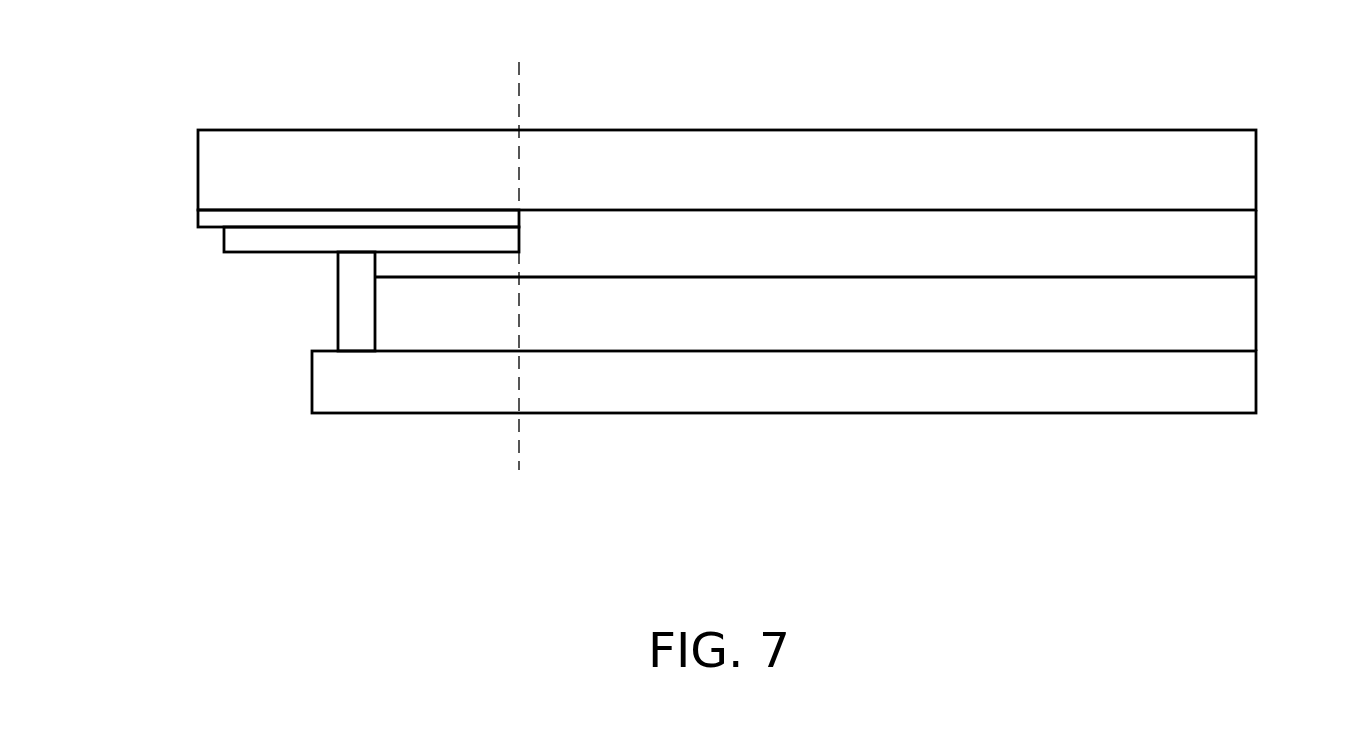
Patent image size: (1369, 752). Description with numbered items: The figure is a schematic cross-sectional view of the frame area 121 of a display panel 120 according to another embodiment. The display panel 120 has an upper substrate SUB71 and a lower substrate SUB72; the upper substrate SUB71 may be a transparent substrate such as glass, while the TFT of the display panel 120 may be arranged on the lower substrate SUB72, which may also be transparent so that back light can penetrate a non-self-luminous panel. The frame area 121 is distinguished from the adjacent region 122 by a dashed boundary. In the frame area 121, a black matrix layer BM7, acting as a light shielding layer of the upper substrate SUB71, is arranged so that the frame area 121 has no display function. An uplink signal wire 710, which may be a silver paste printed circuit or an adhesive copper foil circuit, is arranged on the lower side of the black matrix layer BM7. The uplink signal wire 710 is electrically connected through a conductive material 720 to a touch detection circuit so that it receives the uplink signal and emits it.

The display panel 120 is at (731, 316).
The frame area 121 is at (519, 61).
The display region 122 is at (519, 61).
The upper substrate SUB71 is at (1245, 172).
The lower substrate SUB72 is at (1245, 388).
The black matrix layer BM7 is at (208, 218).
The uplink signal wire 710 is at (235, 240).
The conductive material 720 is at (350, 302).